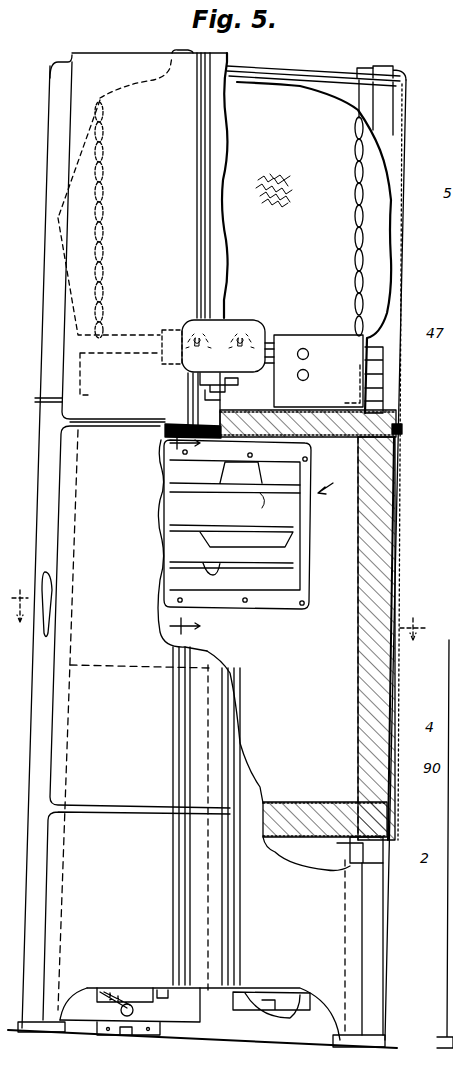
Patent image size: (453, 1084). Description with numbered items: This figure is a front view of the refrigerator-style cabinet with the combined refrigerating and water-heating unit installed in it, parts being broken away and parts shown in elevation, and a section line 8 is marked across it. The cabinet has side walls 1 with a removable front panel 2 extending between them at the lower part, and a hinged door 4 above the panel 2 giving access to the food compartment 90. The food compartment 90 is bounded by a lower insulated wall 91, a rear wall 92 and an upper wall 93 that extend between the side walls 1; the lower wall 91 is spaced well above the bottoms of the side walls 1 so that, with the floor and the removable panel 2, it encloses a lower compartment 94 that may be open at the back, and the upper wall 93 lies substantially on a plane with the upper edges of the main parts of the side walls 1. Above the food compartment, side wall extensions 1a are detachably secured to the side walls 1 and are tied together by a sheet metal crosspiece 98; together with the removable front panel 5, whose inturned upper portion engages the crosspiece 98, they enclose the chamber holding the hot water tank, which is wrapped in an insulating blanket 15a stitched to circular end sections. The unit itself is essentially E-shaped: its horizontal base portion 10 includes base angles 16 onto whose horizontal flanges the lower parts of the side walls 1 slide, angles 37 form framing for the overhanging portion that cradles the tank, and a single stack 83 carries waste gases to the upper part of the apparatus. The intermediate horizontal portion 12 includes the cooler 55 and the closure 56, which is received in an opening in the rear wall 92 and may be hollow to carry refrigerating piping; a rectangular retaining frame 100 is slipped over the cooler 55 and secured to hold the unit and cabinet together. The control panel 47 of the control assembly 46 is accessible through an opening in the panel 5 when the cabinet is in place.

The side walls 1 is at (32, 731).
The side wall extensions 1a is at (53, 82).
The removable front panel 2 is at (333, 973).
The hinged door 4 is at (205, 651).
The removable front panel 5 is at (75, 108).
The section line 8 is at (178, 428).
The base portion 10 is at (218, 606).
The intermediate horizontal portion 12 is at (333, 477).
The insulating material 15a is at (383, 253).
The base angles 16 is at (387, 1042).
The angles 37 is at (360, 397).
The control assembly 46 is at (235, 393).
The control panel 47 is at (233, 324).
The cooler 55 is at (287, 494).
The closure 56 is at (290, 625).
The single stack 83 is at (380, 116).
The food compartment 90 is at (349, 723).
The lower insulated wall 91 is at (315, 803).
The rear wall 92 is at (270, 691).
The upper wall 93 is at (327, 433).
The lower compartment 94 is at (349, 861).
The sheet metal crosspiece 98 is at (343, 80).
The retaining frame 100 is at (302, 580).